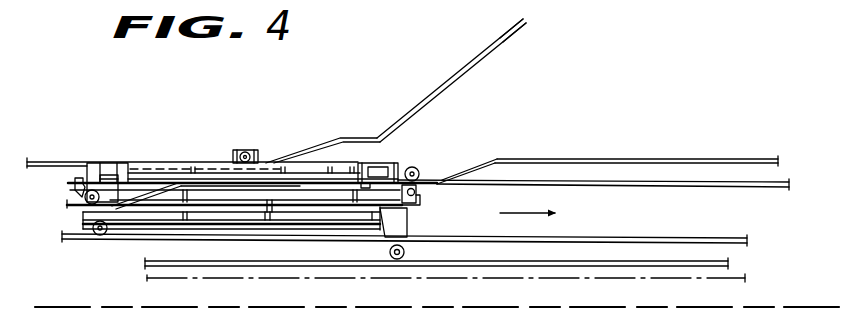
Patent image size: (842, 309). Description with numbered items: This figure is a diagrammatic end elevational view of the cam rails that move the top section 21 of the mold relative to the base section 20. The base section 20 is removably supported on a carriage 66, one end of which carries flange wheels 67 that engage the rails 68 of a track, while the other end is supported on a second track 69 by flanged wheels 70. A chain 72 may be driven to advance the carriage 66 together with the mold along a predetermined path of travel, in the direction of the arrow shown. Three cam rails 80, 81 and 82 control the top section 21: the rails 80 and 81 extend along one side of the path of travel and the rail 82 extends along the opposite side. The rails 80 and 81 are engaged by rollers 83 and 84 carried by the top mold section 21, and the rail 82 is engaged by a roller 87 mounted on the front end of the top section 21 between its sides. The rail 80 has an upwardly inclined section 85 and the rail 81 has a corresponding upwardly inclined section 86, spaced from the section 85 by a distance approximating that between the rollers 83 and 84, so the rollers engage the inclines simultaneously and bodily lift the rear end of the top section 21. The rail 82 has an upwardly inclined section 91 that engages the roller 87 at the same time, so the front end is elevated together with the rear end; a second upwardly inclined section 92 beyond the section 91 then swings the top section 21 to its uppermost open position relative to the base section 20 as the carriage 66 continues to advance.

The base section 20 is at (243, 193).
The top section 21 is at (205, 161).
The carriage 66 is at (411, 228).
The flange wheels 67 is at (97, 235).
The rails 68 is at (645, 238).
The second track 69 is at (602, 261).
The flanged wheels 70 is at (404, 253).
The chain 72 is at (273, 278).
The cam rail 80 is at (737, 189).
The cam rail 81 is at (705, 143).
The cam rail 82 is at (442, 105).
The roller 83 is at (82, 198).
The roller 84 is at (416, 169).
The upwardly inclined section 85 is at (127, 208).
The upwardly inclined section 86 is at (480, 163).
The roller 87 is at (248, 152).
The upwardly inclined section 91 is at (313, 152).
The second upwardly inclined section 92 is at (500, 43).